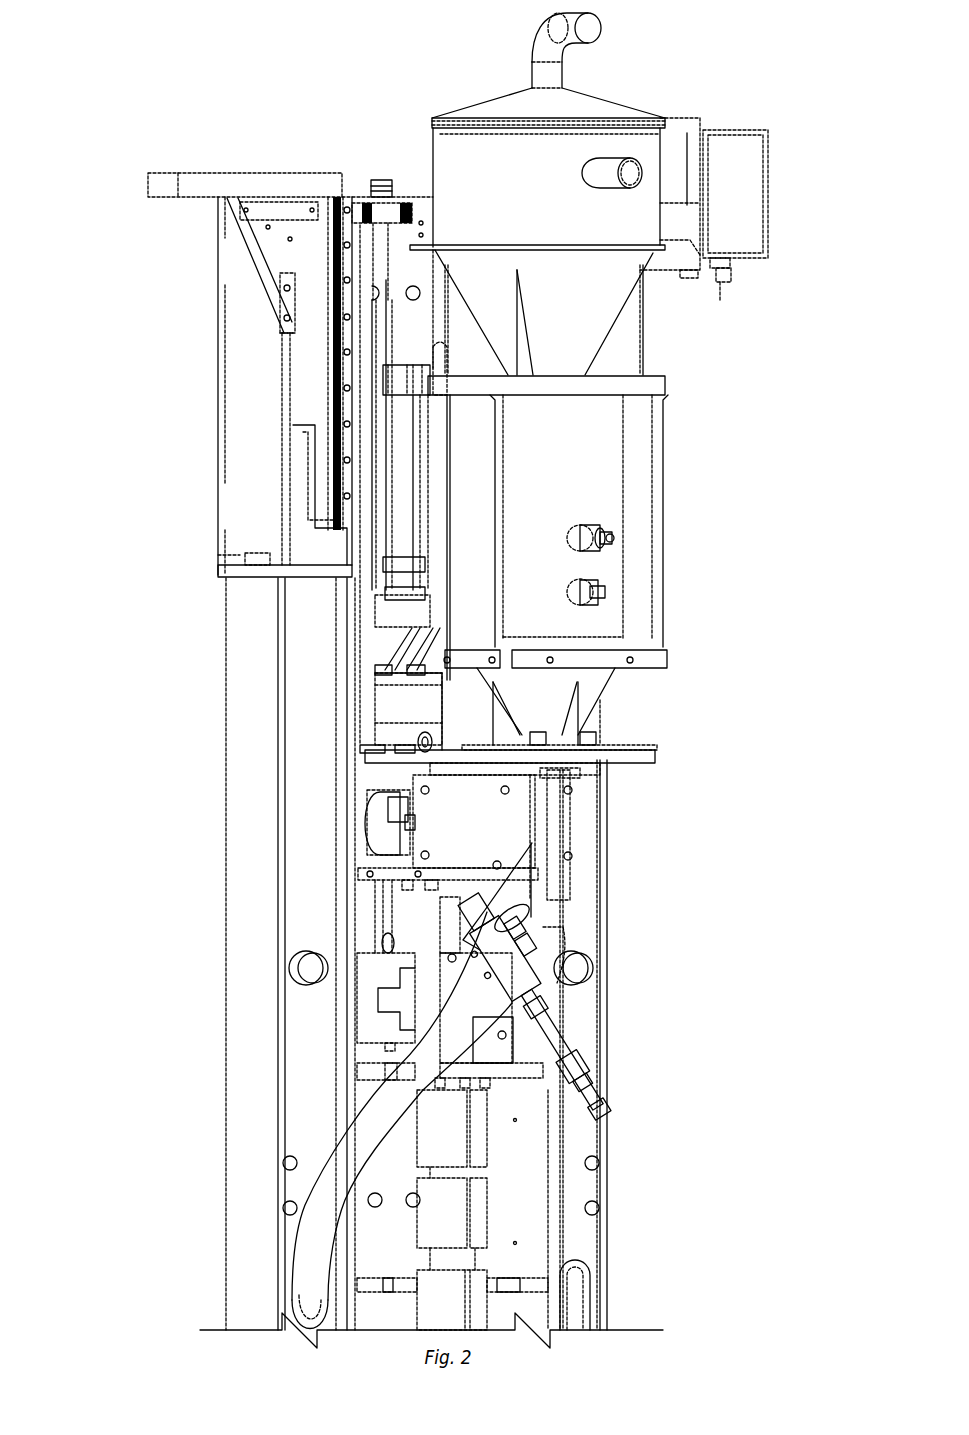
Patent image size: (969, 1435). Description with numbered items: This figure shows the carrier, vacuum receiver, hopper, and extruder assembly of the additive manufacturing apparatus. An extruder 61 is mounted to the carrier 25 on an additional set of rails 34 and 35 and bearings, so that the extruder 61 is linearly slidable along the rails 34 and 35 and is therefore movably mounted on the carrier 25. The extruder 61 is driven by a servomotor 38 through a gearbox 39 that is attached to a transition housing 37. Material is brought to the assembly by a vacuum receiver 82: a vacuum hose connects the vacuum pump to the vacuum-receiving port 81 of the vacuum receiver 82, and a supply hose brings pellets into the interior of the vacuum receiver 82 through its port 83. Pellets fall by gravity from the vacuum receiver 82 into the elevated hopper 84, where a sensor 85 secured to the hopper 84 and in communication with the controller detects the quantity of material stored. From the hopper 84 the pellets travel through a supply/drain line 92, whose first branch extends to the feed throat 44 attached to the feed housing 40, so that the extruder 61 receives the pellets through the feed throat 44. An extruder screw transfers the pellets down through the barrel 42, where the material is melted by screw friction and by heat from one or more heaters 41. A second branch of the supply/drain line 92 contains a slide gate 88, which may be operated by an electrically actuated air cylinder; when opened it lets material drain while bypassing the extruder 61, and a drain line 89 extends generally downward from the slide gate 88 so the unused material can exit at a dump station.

The carrier 25 is at (203, 403).
The rail 34 is at (348, 197).
The rail 35 is at (433, 197).
The transition housing 37 is at (453, 828).
The servomotor 38 is at (401, 491).
The gearbox 39 is at (400, 707).
The feed housing 40 is at (458, 926).
The heater 41 is at (447, 1132).
The barrel 42 is at (448, 1262).
The feed throat 44 is at (472, 982).
The extruder 61 is at (424, 1023).
The vacuum-receiving port 81 is at (588, 30).
The vacuum receiver 82 is at (552, 222).
The port 83 is at (627, 173).
The hopper 84 is at (572, 462).
The sensor 85 is at (617, 540).
The slide gate 88 is at (540, 1005).
The drain line 89 is at (355, 1167).
The supply/drain line 92 is at (547, 830).